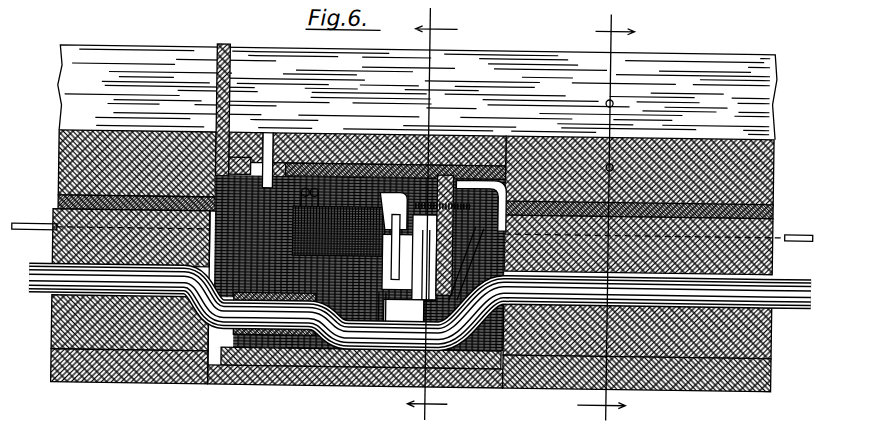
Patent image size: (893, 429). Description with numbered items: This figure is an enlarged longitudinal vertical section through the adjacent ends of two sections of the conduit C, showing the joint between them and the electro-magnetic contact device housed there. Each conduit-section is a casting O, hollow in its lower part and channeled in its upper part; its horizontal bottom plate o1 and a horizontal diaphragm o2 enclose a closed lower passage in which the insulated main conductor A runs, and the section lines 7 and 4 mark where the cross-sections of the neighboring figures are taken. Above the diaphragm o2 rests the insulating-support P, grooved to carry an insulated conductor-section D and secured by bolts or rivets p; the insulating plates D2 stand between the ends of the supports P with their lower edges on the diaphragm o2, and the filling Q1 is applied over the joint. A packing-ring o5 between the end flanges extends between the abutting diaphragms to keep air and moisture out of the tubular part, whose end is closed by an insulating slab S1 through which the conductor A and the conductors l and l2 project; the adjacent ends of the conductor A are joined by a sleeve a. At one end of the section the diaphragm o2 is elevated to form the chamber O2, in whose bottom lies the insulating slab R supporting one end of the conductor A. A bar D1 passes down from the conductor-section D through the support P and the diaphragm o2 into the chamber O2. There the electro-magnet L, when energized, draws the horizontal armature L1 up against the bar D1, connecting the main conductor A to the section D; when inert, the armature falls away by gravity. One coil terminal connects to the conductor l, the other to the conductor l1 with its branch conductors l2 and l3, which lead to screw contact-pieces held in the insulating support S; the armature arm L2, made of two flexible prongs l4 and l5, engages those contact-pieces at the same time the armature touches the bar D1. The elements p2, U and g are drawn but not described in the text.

The insulated conductor-section D is at (417, 92).
The bar or rod D1 is at (266, 158).
The insulating plate D2 is at (222, 47).
The conduit C is at (514, 39).
The insulating-support P is at (416, 168).
The bolt or rivet p is at (611, 162).
The pin p2 is at (611, 100).
The horizontal diaphragm o2 is at (60, 203).
The chamber O2 is at (232, 195).
The tube U is at (413, 222).
The filling Q1 is at (70, 327).
The plate or slab R is at (318, 353).
The casting O is at (55, 368).
The packing-ring o5 is at (210, 387).
The horizontal bottom plate o1 is at (533, 375).
The plate or slab S1 is at (268, 282).
The conductor l1 is at (262, 283).
The sleeve a is at (284, 313).
The electro-magnet L is at (338, 231).
The armature L1 is at (326, 197).
The arm of armature L2 is at (385, 210).
The flexible prong l5 is at (400, 251).
The flexible prong l4 is at (424, 257).
The conductor l is at (424, 286).
The support S is at (442, 235).
The branch conductor l3 is at (481, 212).
The branch conductor l2 is at (470, 254).
The guide g is at (395, 318).
The insulated main conductor A is at (419, 305).
The section line 7 is at (432, 218).
The section line 4 is at (606, 216).